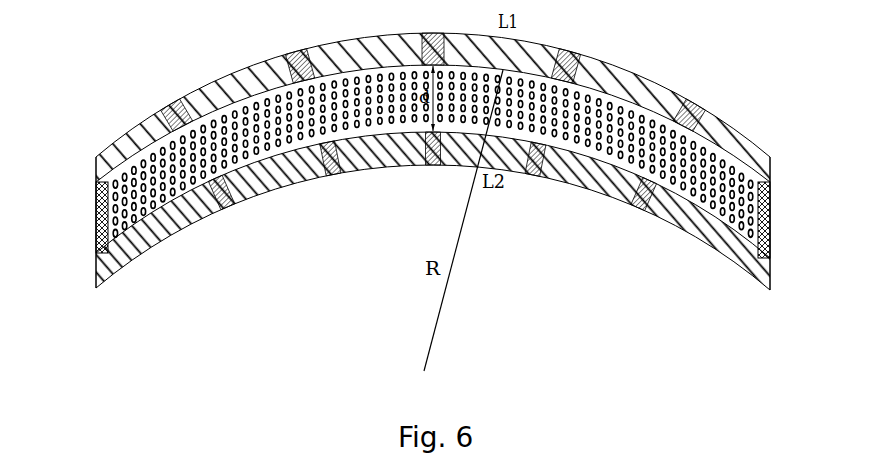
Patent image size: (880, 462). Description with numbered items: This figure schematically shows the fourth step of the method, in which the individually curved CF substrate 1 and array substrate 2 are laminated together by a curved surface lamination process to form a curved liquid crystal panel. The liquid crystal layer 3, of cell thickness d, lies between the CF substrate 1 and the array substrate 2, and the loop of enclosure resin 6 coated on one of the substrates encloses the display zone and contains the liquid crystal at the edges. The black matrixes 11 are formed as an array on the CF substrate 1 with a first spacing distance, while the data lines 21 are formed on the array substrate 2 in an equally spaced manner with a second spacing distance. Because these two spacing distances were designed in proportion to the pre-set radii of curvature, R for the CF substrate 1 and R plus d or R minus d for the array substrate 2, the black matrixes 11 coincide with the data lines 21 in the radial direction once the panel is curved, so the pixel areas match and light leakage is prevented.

The CF substrate 1 is at (713, 138).
The array substrate 2 is at (738, 233).
The liquid crystal layer 3 is at (623, 140).
The enclosure resin 6 is at (98, 223).
The black matrix 11 is at (172, 107).
The data line 21 is at (222, 203).